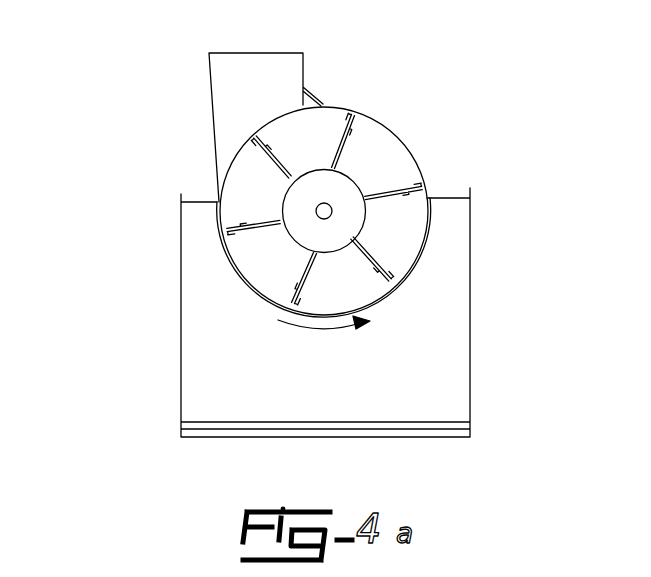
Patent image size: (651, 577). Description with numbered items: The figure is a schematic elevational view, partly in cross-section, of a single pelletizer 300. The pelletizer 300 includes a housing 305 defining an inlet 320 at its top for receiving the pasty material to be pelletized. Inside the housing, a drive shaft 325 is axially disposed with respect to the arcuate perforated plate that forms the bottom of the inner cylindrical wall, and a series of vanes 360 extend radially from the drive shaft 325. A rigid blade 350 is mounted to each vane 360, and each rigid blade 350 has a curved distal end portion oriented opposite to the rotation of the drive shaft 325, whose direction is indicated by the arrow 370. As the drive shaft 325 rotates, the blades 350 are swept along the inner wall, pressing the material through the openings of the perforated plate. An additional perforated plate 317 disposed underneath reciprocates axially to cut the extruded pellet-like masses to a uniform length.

The pelletizer 300 is at (308, 220).
The housing 305 is at (443, 395).
The additional perforated plate 317 is at (404, 286).
The inlet 320 is at (274, 72).
The drive shaft 325 is at (327, 207).
The rigid blade 350 is at (350, 130).
The vane 360 is at (265, 224).
The arrow 370 is at (317, 328).